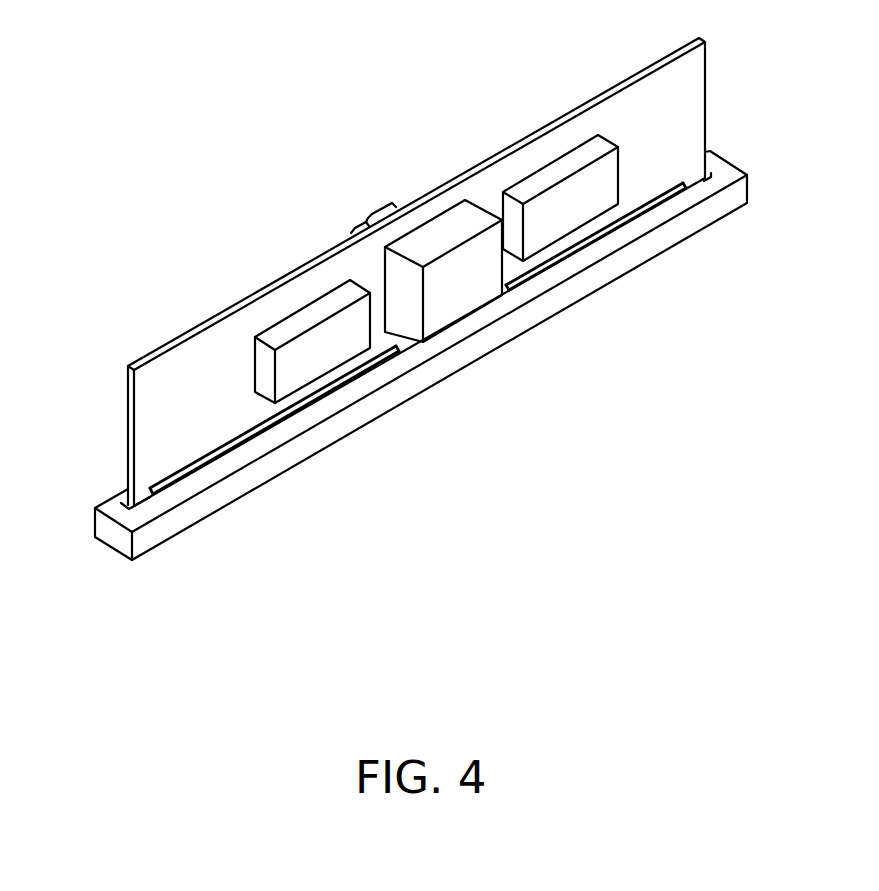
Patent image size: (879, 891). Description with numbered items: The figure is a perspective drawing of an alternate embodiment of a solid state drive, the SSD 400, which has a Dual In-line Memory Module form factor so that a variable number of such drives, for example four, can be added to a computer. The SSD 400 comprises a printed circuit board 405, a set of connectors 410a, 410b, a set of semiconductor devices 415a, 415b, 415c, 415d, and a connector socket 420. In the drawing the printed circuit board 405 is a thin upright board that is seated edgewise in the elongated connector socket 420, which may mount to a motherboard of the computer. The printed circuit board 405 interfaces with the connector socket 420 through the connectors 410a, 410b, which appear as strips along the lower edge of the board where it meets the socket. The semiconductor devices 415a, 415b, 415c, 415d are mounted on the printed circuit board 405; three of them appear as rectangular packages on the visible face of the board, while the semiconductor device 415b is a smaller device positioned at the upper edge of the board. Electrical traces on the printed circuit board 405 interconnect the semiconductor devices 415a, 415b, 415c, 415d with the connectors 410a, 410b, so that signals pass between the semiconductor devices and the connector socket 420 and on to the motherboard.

The SSD 400 is at (152, 136).
The printed circuit board 405 is at (128, 375).
The connector 410a is at (212, 457).
The connector 410b is at (664, 196).
The semiconductor device 415a is at (318, 298).
The semiconductor device 415b is at (392, 208).
The semiconductor device 415c is at (467, 203).
The semiconductor device 415d is at (547, 168).
The connector socket 420 is at (120, 553).